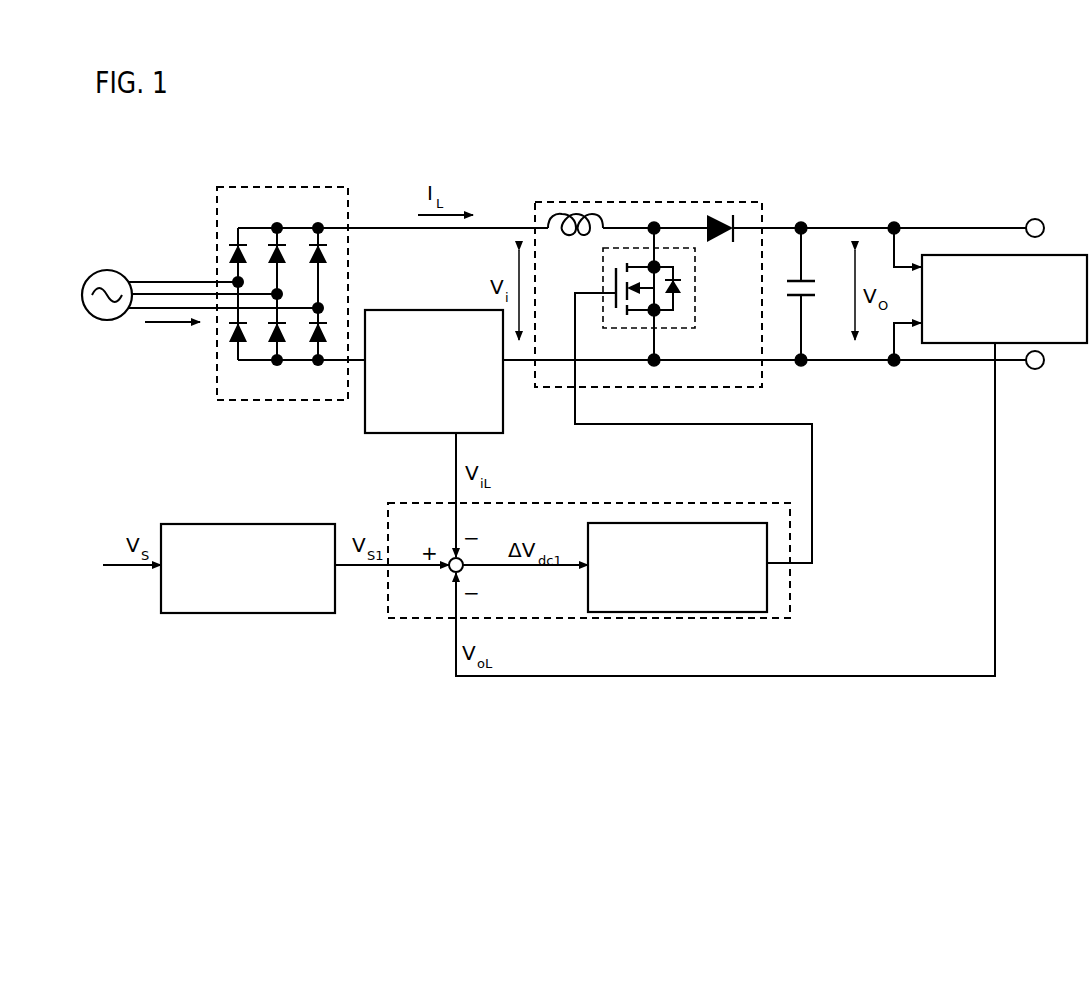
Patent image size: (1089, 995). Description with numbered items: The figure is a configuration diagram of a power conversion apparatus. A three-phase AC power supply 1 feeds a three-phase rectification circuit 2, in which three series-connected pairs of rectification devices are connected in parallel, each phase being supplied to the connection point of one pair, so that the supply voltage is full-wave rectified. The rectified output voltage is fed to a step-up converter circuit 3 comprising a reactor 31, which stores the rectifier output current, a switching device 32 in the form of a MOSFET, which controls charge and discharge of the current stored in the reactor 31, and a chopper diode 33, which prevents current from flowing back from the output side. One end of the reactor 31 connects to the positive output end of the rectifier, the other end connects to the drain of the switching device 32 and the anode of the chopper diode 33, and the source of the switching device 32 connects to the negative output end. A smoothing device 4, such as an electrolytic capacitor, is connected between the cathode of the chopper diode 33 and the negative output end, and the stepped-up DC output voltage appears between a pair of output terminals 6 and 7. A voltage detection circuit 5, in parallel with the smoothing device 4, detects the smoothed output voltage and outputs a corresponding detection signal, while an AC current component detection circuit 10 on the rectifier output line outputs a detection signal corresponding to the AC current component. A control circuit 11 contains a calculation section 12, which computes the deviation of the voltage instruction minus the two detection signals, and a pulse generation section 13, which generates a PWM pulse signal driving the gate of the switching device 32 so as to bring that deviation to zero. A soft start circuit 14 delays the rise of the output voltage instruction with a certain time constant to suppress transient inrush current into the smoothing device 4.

The three-phase AC power supply 1 is at (94, 270).
The three-phase rectification circuit 2 is at (284, 187).
The step-up converter circuit 3 is at (603, 202).
The reactor 31 is at (552, 217).
The switching device 32 is at (680, 228).
The chopper diode 33 is at (720, 215).
The smoothing device 4 is at (793, 272).
The voltage detection circuit 5 is at (941, 255).
The output terminal 6 is at (1034, 219).
The output terminal 7 is at (1035, 369).
The AC current component detection circuit 10 is at (443, 310).
The control circuit 11 is at (540, 503).
The calculation section 12 is at (450, 572).
The pulse generation section 13 is at (687, 523).
The soft start circuit 14 is at (268, 524).